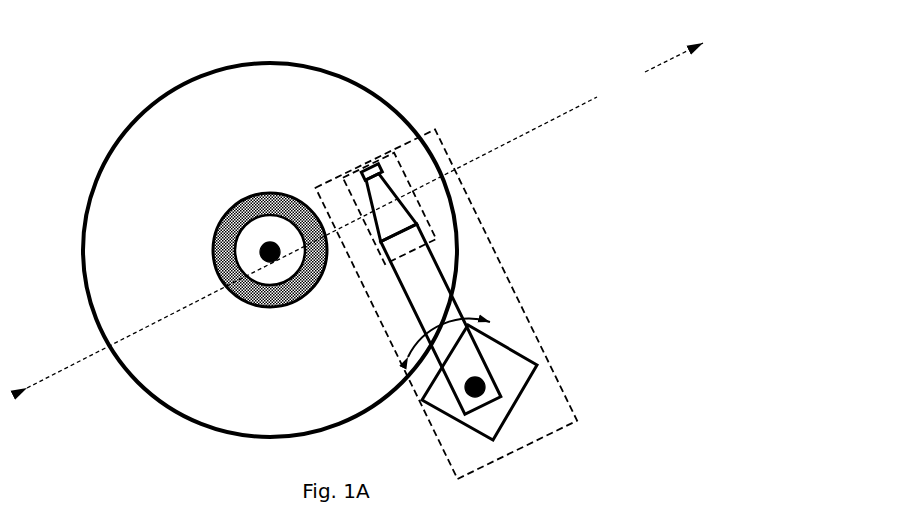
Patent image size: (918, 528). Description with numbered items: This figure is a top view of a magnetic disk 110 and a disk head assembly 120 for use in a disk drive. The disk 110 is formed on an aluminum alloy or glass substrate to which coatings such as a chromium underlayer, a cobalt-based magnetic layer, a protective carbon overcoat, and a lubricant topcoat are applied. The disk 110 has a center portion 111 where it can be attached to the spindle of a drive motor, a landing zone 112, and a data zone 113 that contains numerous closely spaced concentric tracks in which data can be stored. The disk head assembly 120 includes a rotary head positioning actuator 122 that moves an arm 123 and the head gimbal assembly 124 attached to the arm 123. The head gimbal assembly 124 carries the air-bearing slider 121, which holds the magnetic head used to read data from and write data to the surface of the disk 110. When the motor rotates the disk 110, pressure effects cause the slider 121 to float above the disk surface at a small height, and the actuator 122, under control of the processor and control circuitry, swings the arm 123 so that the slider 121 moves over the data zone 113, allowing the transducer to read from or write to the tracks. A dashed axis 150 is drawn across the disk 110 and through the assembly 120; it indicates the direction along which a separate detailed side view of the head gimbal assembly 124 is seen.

The magnetic disk 110 is at (159, 90).
The center portion 111 is at (265, 233).
The landing zone 112 is at (223, 275).
The data zone 113 is at (289, 120).
The disk head assembly 120 is at (499, 247).
The air-bearing slider 121 is at (367, 172).
The rotary head positioning actuator 122 is at (517, 347).
The arm 123 is at (428, 307).
The head gimbal assembly 124 is at (421, 193).
The axis 150 is at (365, 215).